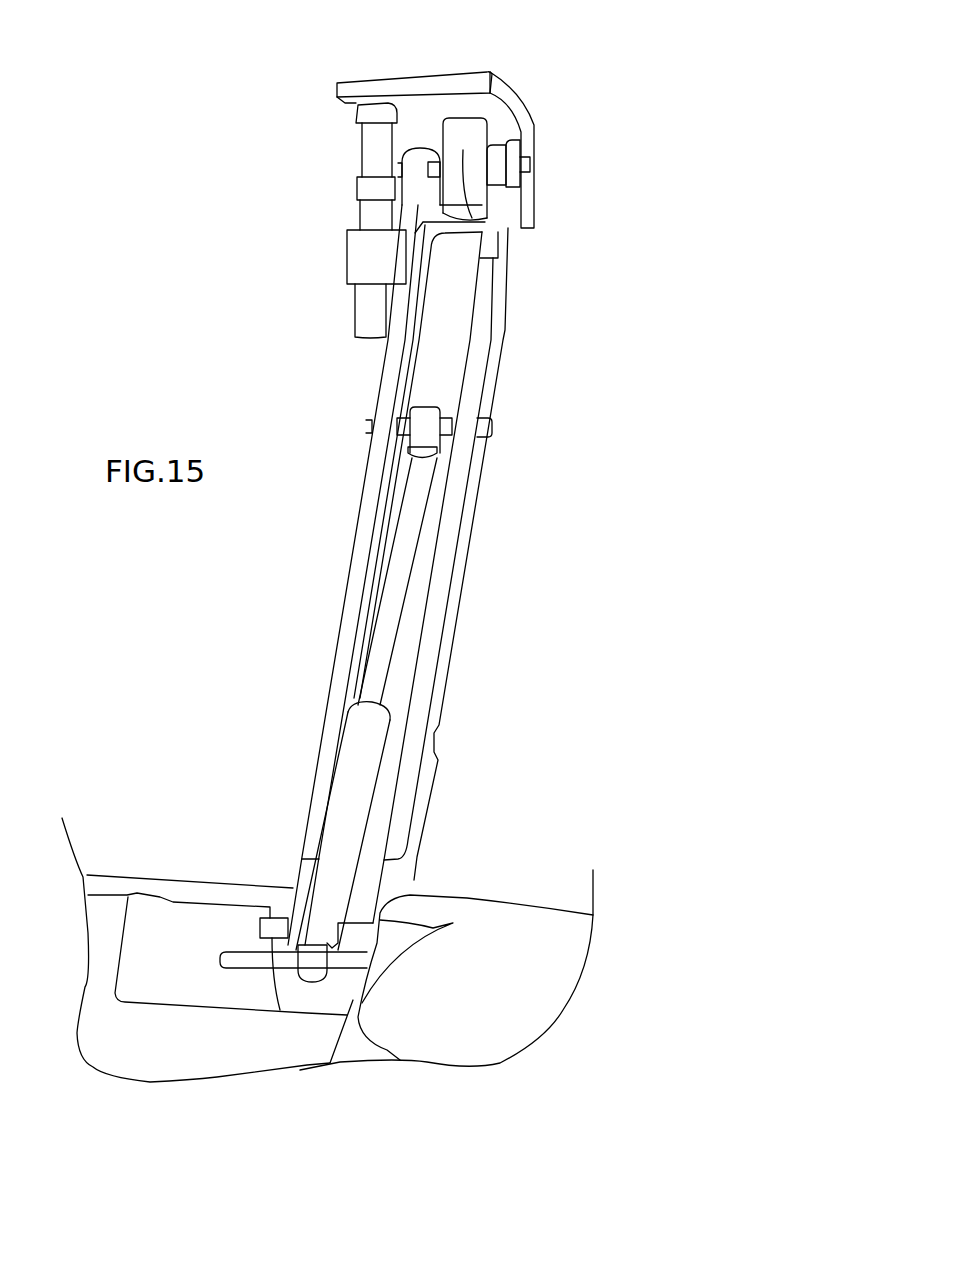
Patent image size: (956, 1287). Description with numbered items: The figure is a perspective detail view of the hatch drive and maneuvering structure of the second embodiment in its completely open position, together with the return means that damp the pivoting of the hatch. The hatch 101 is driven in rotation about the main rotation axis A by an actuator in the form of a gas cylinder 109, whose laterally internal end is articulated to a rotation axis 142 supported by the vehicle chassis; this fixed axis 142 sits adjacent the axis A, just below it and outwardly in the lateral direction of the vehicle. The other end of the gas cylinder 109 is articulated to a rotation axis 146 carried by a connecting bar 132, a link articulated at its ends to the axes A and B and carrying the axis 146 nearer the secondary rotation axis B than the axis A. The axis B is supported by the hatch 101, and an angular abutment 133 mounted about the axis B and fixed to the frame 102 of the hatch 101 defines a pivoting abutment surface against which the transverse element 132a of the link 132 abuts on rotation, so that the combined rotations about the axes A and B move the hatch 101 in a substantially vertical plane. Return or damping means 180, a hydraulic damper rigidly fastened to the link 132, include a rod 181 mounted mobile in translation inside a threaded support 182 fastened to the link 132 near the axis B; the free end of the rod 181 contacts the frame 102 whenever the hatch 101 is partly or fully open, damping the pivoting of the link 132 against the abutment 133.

The hatch 101 is at (558, 106).
The frame 102 is at (485, 105).
The rod 181 is at (372, 158).
The return or damping means 180 is at (349, 206).
The threaded support 182 is at (363, 260).
The connecting bar 132 is at (440, 804).
The transverse element 132a is at (482, 210).
The angular abutment 133 is at (456, 205).
The secondary rotation axis B is at (531, 164).
The rotation axis 146 is at (489, 430).
The gas cylinder 109 is at (388, 628).
The main rotation axis A is at (270, 930).
The rotation axis 142 is at (255, 963).